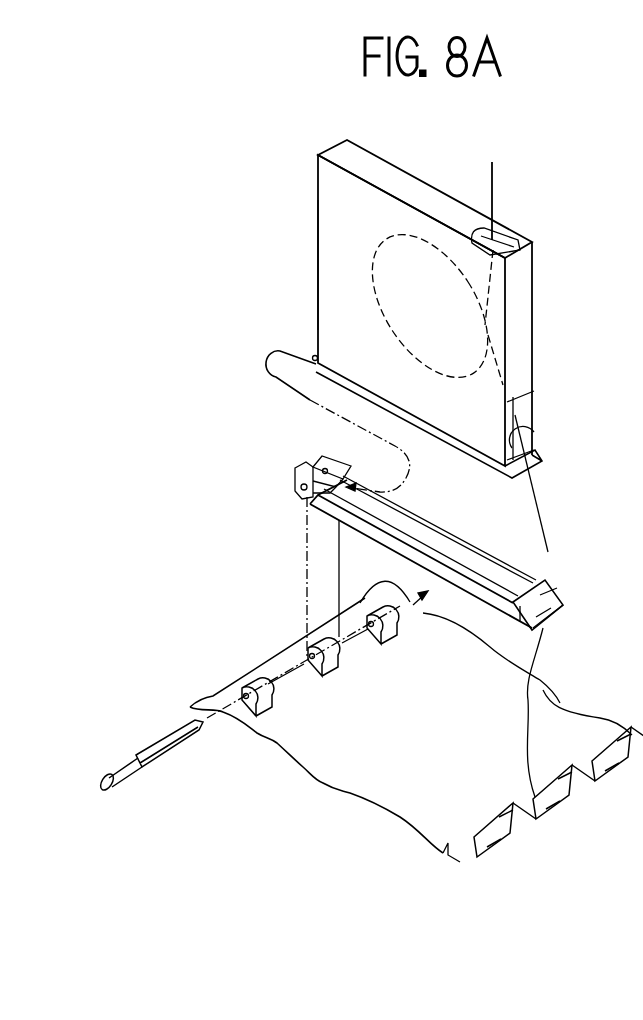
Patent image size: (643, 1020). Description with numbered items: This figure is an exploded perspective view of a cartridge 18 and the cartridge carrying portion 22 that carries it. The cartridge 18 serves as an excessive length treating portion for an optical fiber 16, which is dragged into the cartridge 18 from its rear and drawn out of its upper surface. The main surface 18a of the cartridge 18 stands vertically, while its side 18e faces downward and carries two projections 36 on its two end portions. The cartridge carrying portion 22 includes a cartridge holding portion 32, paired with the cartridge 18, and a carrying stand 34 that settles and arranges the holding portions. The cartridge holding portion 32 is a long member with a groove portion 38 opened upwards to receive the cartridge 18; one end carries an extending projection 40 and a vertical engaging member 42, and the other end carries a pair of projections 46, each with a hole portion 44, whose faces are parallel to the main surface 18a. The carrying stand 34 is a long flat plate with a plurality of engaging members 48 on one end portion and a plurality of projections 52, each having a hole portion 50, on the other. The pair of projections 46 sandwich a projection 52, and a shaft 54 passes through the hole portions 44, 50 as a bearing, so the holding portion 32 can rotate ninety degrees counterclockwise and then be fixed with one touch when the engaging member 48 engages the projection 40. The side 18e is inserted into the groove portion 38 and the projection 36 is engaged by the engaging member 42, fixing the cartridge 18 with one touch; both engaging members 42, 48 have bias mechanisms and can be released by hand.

The optical fiber 16 is at (497, 200).
The cartridge 18 is at (290, 236).
The main surface 18a is at (335, 305).
The side 18e is at (425, 432).
The cartridge carrying portion 22 is at (231, 487).
The cartridge holding portion 32 is at (370, 535).
The carrying stand 34 is at (280, 663).
The projection 36 is at (312, 356).
The groove portion 38 is at (440, 547).
The extending projection 40 is at (563, 607).
The vertical engaging member 42 is at (550, 580).
The hole portion 44 is at (297, 488).
The projection 46 is at (337, 452).
The engaging member 48 is at (503, 833).
The hole portion 50 is at (240, 690).
The projection 52 is at (258, 677).
The shaft 54 is at (143, 753).